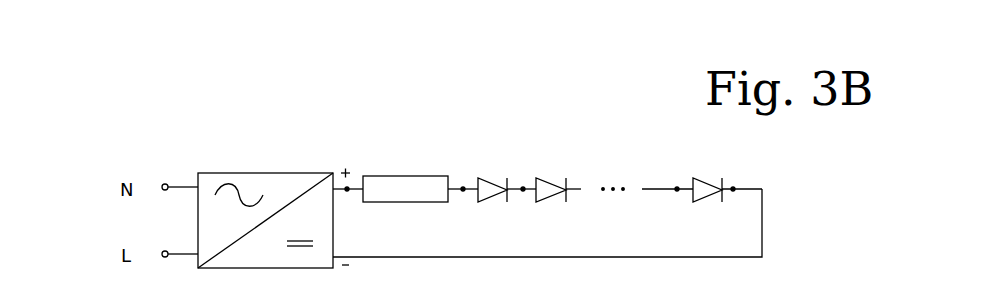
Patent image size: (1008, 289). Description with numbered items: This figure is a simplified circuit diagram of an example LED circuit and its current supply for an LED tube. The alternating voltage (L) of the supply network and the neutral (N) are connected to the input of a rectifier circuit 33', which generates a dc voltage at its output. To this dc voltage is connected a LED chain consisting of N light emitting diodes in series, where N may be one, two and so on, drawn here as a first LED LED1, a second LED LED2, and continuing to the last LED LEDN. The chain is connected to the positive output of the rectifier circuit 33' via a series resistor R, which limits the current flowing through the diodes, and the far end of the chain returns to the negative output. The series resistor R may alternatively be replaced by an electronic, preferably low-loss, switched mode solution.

The rectifier circuit 33' is at (265, 203).
The series resistor R is at (405, 175).
The first LED of the LED chain LED1 is at (495, 176).
The second LED of the LED chain LED2 is at (553, 176).
The Nth LED of the LED chain LEDN is at (706, 176).